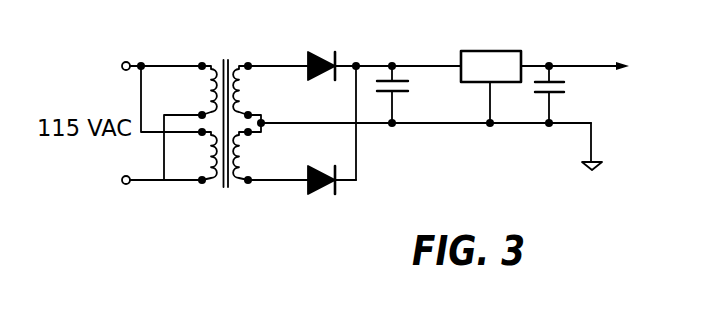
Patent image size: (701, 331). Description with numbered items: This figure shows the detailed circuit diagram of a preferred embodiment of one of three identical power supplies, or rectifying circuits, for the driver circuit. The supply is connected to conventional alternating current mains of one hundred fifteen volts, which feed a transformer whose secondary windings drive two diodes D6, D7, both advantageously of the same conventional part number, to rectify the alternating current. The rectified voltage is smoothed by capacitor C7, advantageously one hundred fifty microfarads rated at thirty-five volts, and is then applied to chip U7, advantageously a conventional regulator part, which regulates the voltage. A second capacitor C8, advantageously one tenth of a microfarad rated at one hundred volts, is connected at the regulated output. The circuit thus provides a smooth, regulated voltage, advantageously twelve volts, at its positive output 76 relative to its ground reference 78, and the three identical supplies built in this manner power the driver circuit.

The positive output 76 is at (608, 66).
The ground reference 78 is at (587, 160).
The diode D6 is at (322, 50).
The diode D7 is at (323, 165).
The capacitor C7 is at (409, 94).
The chip U7 is at (491, 87).
The capacitor C8 is at (571, 94).